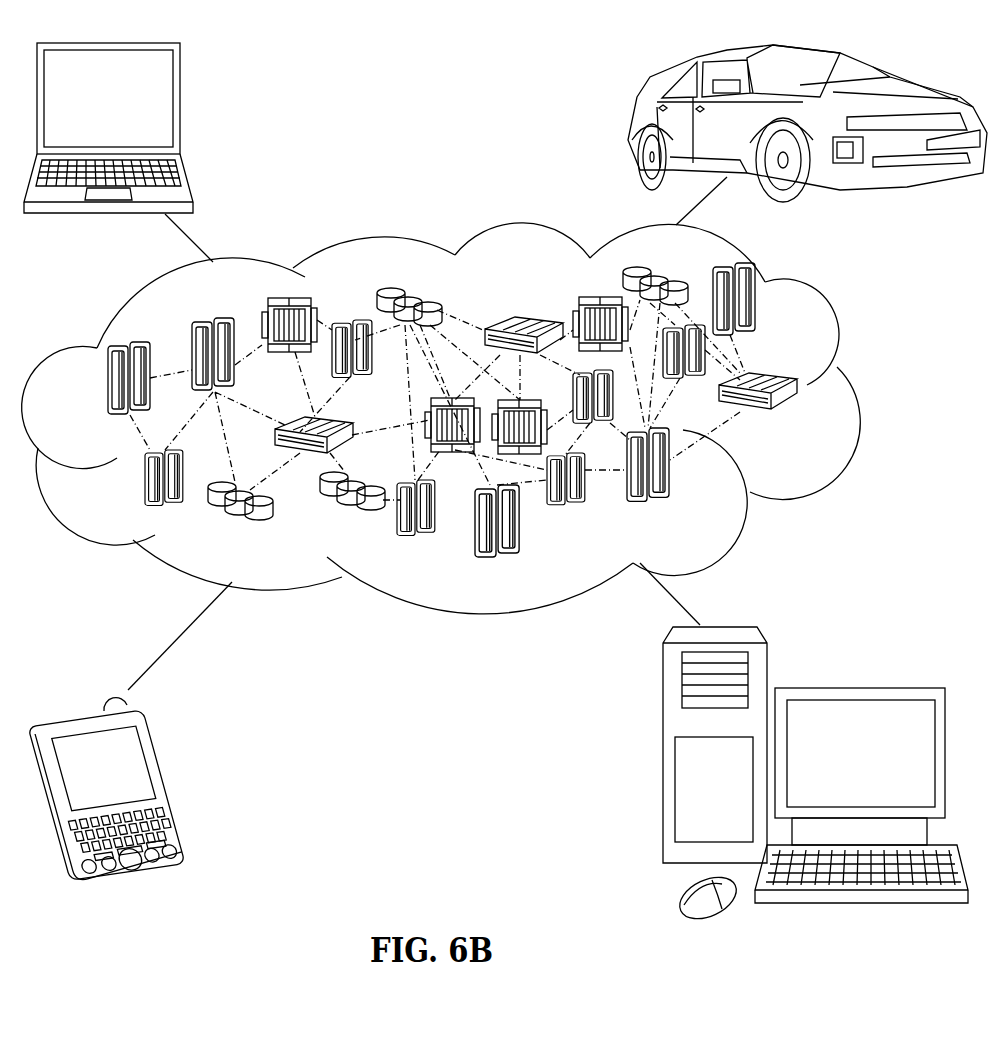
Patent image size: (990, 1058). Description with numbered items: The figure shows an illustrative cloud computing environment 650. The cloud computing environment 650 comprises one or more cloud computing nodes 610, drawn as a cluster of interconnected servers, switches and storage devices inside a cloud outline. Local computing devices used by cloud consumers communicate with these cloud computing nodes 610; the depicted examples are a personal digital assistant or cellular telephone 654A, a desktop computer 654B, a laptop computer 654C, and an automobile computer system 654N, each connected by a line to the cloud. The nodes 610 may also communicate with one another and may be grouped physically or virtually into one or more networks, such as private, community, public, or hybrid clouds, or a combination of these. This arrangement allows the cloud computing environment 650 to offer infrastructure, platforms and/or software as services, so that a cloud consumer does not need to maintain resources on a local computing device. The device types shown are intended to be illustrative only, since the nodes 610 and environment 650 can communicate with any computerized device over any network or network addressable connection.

The laptop computer 654C is at (181, 107).
The automobile computer system 654N is at (631, 122).
The personal digital assistant or cellular telephone 654A is at (172, 783).
The desktop computer 654B is at (857, 686).
The cloud computing environment 650 is at (860, 388).
The cloud computing nodes 610 is at (806, 420).